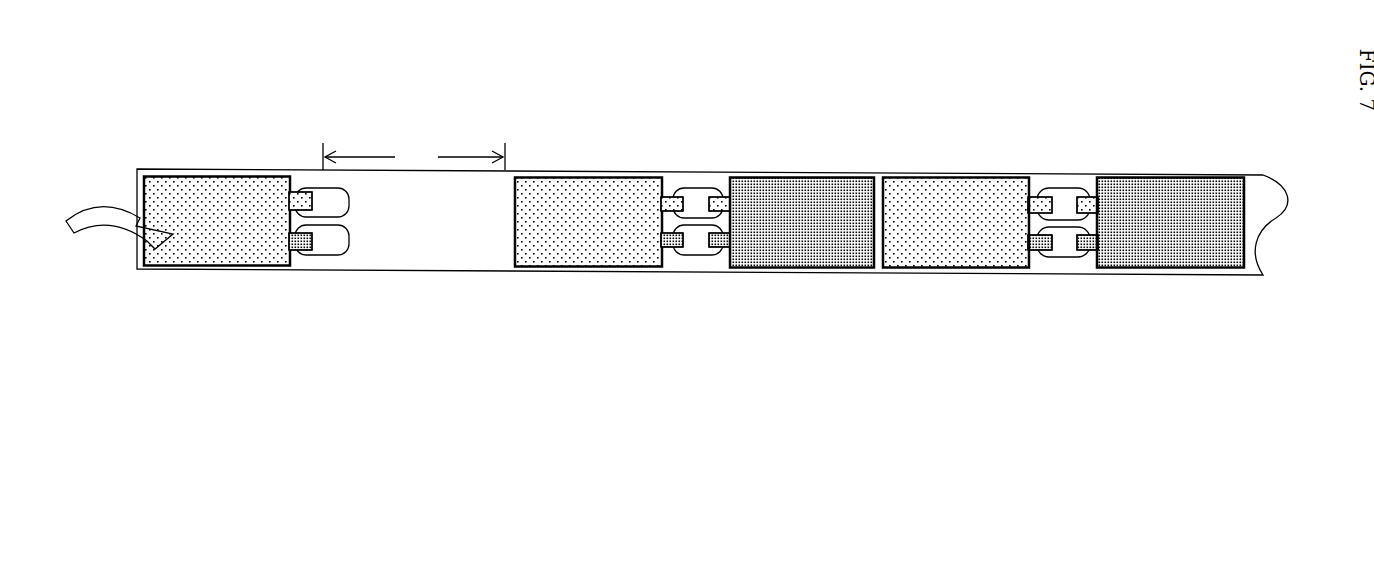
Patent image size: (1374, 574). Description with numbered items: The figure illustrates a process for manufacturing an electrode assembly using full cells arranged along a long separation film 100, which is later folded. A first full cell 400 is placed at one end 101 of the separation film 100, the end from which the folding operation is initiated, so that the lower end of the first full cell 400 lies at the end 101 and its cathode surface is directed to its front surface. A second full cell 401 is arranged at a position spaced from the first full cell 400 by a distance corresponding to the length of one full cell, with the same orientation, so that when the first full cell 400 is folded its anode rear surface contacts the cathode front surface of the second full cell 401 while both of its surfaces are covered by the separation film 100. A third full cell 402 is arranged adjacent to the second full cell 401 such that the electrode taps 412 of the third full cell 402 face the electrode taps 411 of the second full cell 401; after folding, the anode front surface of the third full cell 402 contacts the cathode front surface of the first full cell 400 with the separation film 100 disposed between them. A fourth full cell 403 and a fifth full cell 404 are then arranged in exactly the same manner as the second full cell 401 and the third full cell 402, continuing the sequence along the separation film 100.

The separation film 100 is at (415, 263).
The end of the separation film 101 is at (137, 250).
The first full cell 400 is at (216, 185).
The second full cell 401 is at (575, 185).
The third full cell 402 is at (838, 185).
The fourth full cell 403 is at (942, 185).
The fifth full cell 404 is at (1203, 187).
The electrode taps of the second full cell 411 is at (677, 254).
The electrode taps of the third full cell 412 is at (720, 188).